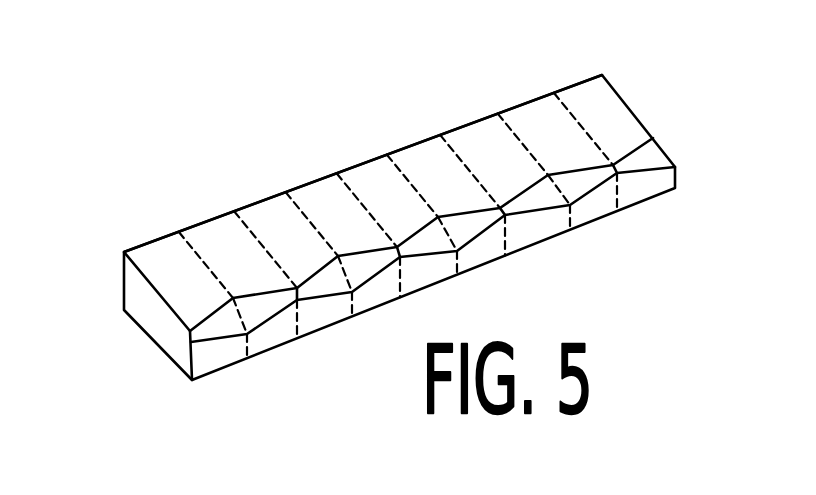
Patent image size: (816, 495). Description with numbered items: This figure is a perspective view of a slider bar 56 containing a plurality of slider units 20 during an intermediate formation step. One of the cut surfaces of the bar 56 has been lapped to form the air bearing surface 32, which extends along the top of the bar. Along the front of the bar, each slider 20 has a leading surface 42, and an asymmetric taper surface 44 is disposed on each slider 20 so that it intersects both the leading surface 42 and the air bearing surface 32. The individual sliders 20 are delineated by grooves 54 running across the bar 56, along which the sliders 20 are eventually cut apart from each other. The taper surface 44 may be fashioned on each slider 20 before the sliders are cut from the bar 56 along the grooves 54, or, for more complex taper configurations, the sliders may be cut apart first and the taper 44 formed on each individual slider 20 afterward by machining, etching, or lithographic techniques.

The slider unit 20 is at (157, 253).
The air bearing surface 32 is at (430, 167).
The leading surface 42 is at (485, 240).
The asymmetric taper surface 44 is at (220, 325).
The groove 54 is at (520, 137).
The slider bar 56 is at (684, 88).